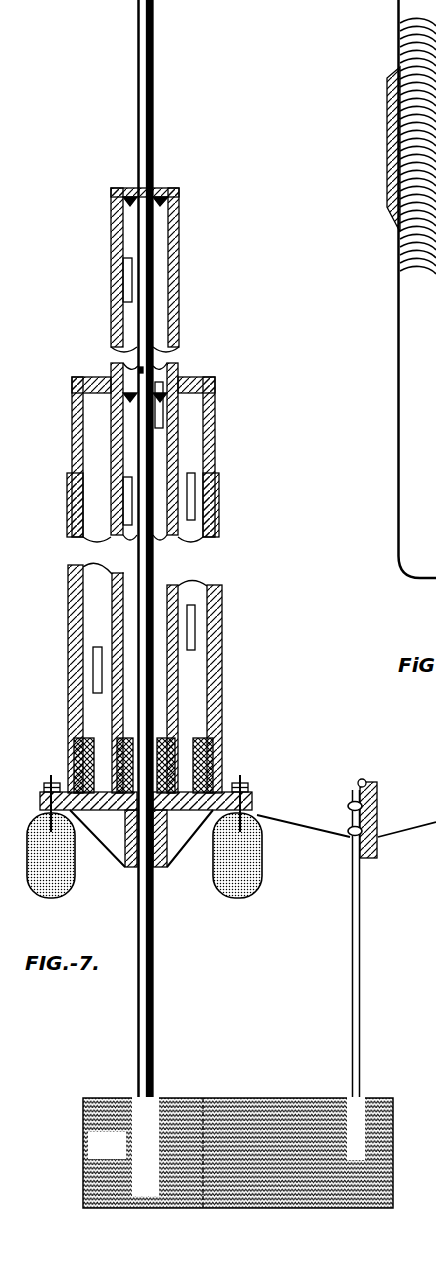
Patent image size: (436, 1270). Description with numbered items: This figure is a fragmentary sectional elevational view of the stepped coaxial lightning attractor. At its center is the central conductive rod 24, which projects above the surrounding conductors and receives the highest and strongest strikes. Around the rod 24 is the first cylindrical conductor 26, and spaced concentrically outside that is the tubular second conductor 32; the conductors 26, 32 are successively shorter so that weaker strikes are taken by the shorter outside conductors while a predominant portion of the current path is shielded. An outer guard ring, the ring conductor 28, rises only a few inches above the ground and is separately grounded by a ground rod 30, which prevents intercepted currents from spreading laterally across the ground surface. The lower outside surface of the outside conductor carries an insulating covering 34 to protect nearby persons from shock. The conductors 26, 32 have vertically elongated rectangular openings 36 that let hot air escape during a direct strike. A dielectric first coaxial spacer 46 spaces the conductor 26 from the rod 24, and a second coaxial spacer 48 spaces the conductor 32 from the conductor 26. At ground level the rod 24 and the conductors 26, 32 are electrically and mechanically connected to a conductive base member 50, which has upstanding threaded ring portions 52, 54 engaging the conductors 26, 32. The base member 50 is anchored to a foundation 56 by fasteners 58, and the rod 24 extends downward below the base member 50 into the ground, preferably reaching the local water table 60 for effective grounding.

The central conductive rod 24 is at (141, 67).
The first cylindrical conductor 26 is at (180, 277).
The ring conductor 28 is at (364, 781).
The ground rod 30 is at (348, 808).
The second conductor 32 is at (213, 424).
The covering 34 is at (220, 671).
The openings 36 is at (122, 298).
The first coaxial spacer 46 is at (160, 189).
The second coaxial spacer 48 is at (197, 377).
The base member 50 is at (120, 853).
The threaded ring portion 52 is at (173, 722).
The threaded ring portion 54 is at (220, 738).
The foundation 56 is at (263, 853).
The fasteners 58 is at (240, 780).
The water table 60 is at (120, 1156).